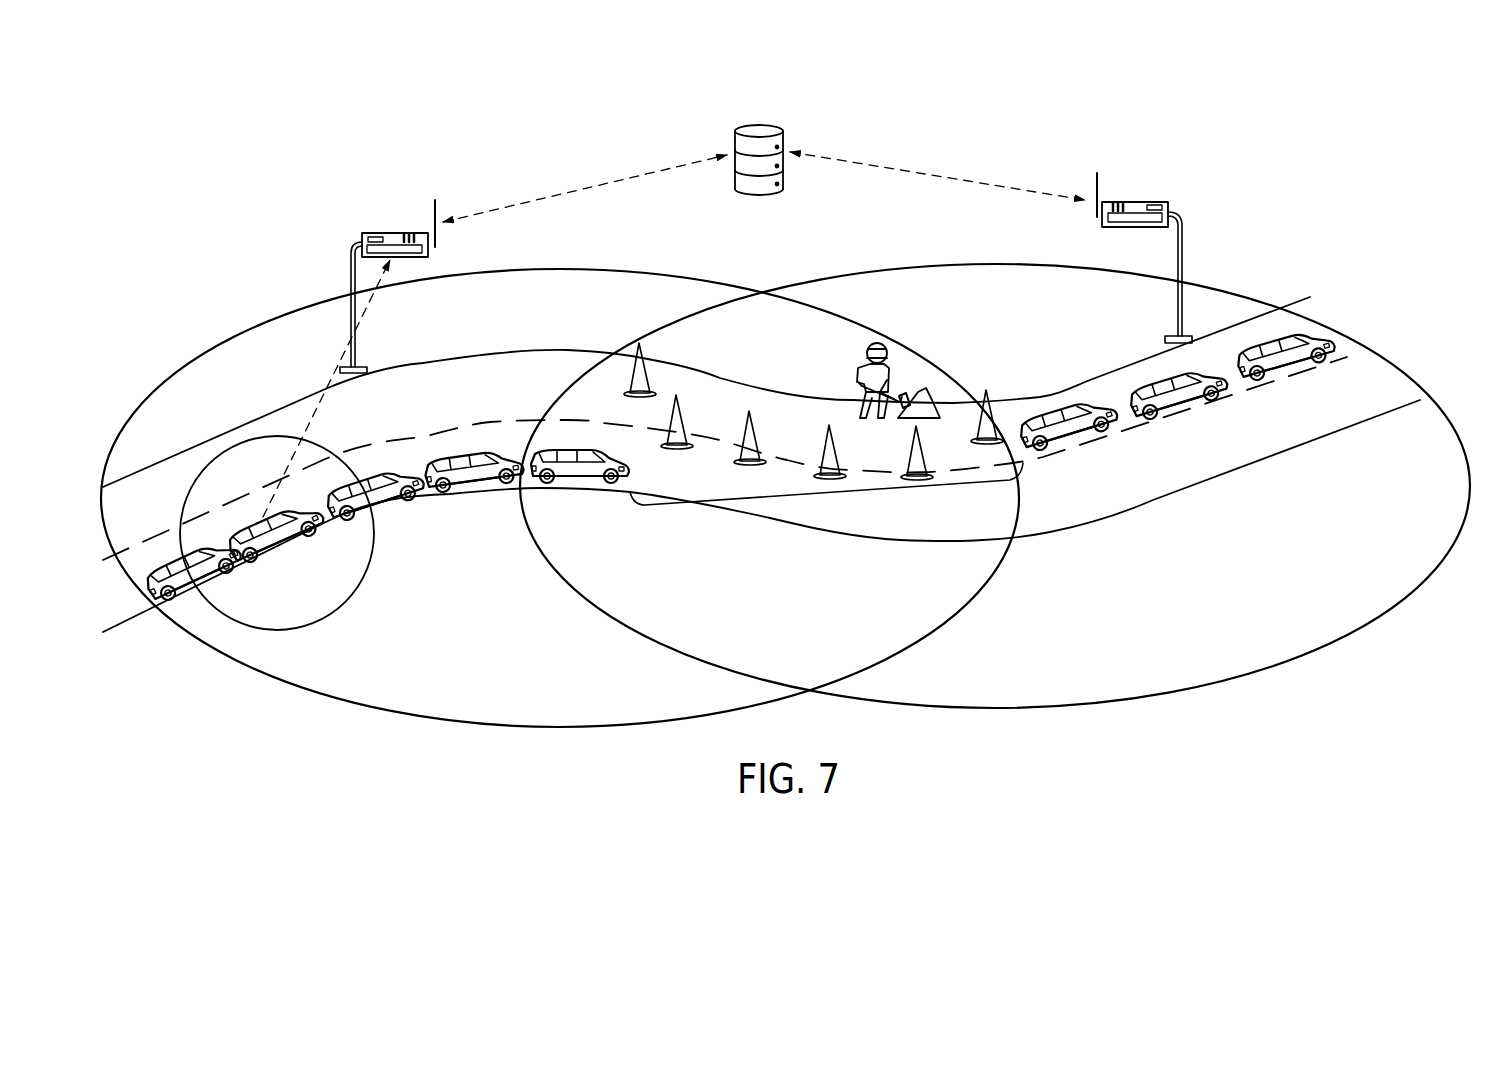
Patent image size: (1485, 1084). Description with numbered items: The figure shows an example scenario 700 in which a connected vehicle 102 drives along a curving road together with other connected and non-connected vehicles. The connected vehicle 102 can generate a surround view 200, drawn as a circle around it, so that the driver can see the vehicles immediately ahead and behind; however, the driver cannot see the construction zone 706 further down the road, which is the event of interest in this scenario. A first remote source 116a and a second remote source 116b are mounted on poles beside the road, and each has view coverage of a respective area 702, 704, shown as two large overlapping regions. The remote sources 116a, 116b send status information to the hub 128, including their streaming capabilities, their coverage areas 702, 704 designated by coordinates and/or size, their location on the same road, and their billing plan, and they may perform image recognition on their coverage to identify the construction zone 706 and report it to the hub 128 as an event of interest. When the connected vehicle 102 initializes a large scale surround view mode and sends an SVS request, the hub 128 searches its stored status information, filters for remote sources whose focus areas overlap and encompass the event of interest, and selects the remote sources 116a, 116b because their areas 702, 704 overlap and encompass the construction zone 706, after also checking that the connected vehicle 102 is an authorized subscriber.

The example scenario 700 is at (268, 156).
The connected vehicle 102 is at (173, 598).
The surround view 200 is at (258, 632).
The area 702 is at (373, 690).
The area 704 is at (1150, 670).
The construction zone 706 is at (827, 490).
The first remote source 116a is at (390, 232).
The second remote source 116b is at (1137, 202).
The hub 128 is at (746, 125).